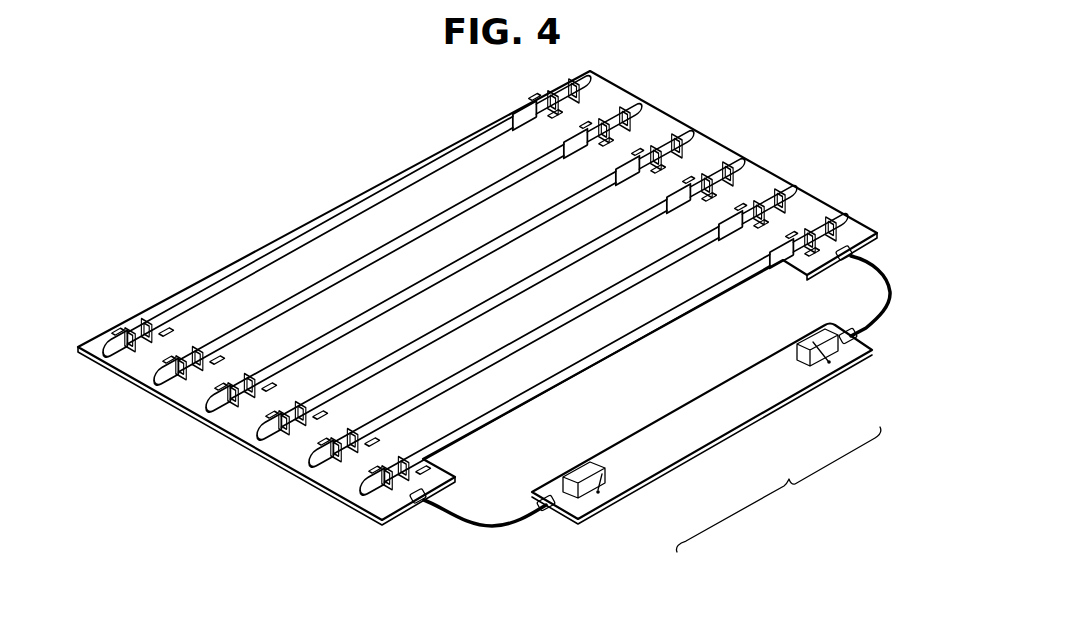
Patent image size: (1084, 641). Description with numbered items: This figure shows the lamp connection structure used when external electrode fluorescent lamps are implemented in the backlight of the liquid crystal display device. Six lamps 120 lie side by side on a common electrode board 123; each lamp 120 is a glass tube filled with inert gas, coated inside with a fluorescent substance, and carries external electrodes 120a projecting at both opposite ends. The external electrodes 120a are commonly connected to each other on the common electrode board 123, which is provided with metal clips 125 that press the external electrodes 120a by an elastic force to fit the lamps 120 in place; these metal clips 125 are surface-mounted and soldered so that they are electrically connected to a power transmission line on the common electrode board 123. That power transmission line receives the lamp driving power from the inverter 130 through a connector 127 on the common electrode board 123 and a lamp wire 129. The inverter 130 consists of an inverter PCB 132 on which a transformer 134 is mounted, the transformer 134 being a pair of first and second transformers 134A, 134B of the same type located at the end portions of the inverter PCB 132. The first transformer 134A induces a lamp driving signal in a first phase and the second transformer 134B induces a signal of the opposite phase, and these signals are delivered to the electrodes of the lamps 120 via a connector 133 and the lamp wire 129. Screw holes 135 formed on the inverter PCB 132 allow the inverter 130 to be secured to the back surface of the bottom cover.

The lamp 120 is at (268, 261).
The external electrode 120a is at (170, 318).
The metal clip 125 is at (115, 327).
The common electrode board 123 is at (333, 490).
The connector 127 is at (415, 502).
The lamp wire 129 is at (488, 528).
The inverter 130 is at (744, 440).
The inverter PCB 132 is at (662, 420).
The connector 133 is at (552, 508).
The transformer 134 is at (778, 489).
The first transformer 134A is at (600, 484).
The second transformer 134B is at (813, 357).
The screw hole 135 is at (578, 466).